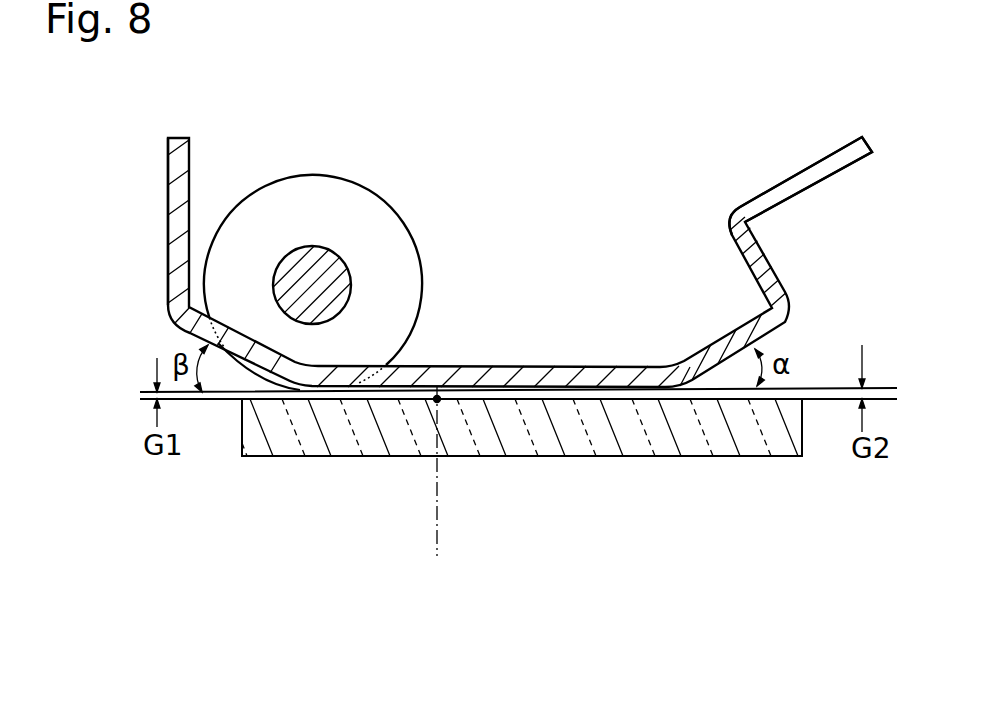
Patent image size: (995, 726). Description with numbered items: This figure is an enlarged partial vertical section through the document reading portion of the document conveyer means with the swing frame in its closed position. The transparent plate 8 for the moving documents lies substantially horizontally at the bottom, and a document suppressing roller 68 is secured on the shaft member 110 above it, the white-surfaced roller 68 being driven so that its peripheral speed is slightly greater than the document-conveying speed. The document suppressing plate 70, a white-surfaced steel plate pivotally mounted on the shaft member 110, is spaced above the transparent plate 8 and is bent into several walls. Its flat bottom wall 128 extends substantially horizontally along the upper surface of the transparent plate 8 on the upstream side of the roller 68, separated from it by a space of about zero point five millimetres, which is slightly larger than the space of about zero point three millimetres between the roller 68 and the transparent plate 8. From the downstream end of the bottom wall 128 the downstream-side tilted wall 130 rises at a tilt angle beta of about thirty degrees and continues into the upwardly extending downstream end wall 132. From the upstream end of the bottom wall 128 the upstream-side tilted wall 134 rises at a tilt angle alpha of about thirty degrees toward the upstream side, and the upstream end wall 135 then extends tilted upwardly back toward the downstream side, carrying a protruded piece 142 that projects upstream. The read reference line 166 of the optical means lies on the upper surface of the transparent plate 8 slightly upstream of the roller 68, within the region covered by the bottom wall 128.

The transparent plate for the moving documents 8 is at (480, 458).
The document suppressing roller 68 is at (373, 193).
The document suppressing plate 70 is at (167, 237).
The shaft member 110 is at (345, 267).
The bottom wall 128 is at (525, 367).
The downstream-side tilted wall 130 is at (208, 313).
The downstream end wall 132 is at (167, 173).
The upstream-side tilted wall 134 is at (700, 350).
The upstream end wall 135 is at (730, 235).
The protruded piece 142 is at (803, 168).
The read reference line 166 is at (436, 398).